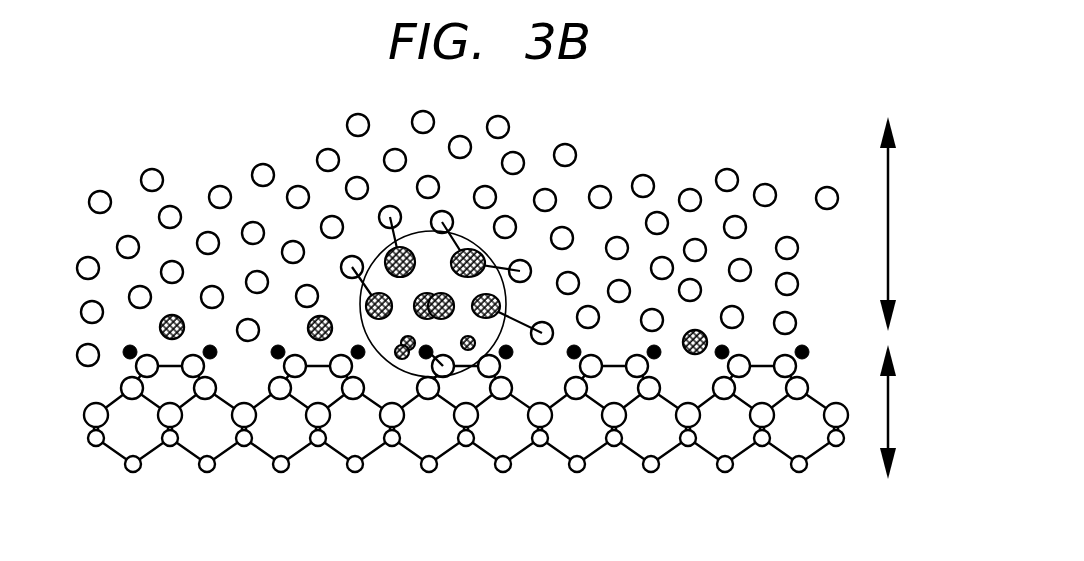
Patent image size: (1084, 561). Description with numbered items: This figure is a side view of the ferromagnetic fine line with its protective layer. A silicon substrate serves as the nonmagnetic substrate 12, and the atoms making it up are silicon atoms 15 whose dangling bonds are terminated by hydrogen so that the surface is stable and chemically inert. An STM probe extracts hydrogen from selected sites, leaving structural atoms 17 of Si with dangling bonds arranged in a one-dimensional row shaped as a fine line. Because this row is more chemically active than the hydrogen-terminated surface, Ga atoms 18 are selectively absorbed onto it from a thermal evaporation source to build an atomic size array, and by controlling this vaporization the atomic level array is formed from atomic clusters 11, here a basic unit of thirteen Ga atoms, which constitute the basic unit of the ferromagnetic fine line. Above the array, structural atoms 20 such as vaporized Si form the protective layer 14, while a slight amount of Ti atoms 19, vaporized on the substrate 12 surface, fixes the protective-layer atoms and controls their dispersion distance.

The atomic cluster 11 is at (389, 322).
The nonmagnetic substrate 12 is at (522, 420).
The protective layer 14 is at (520, 230).
The silicon atoms 15 is at (810, 350).
The structural atoms 17 is at (450, 370).
The Ga atoms 18 is at (366, 308).
The atoms 19 is at (172, 338).
The structural atoms of the protective layer 20 is at (650, 177).